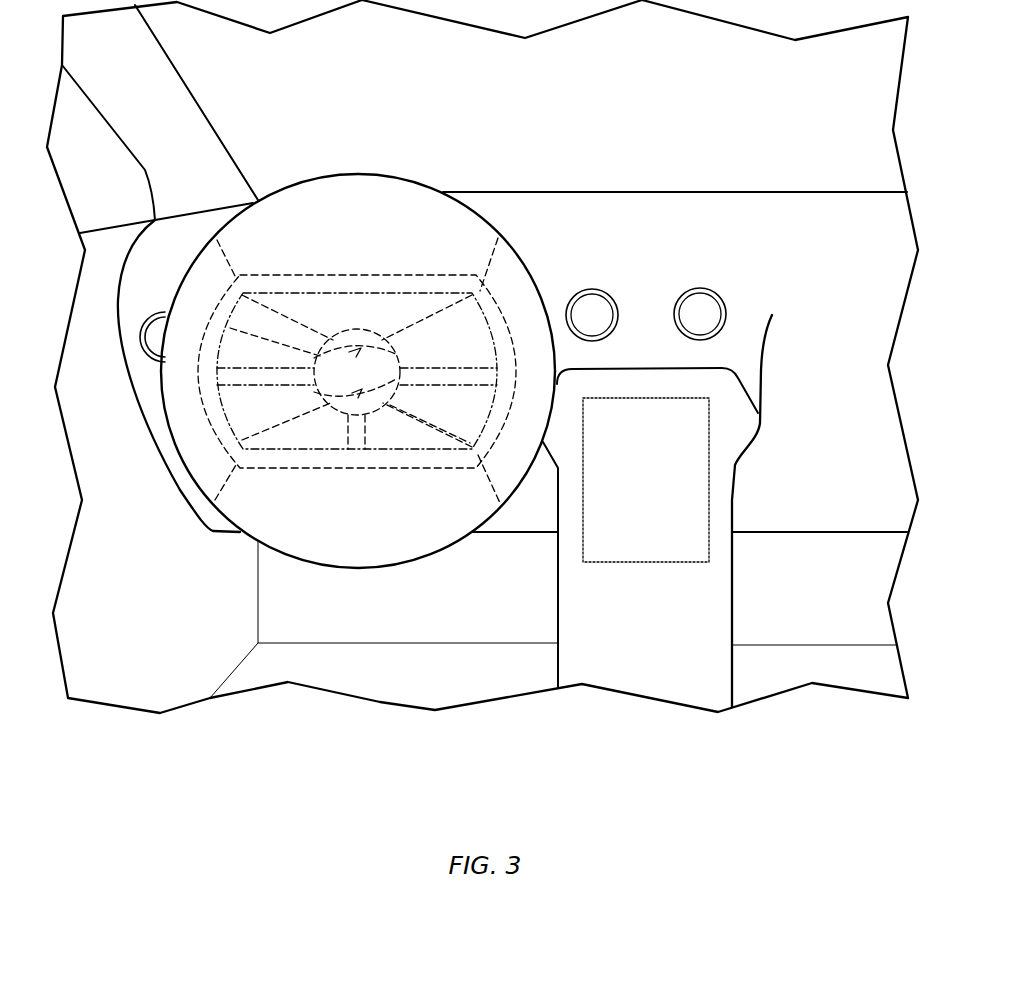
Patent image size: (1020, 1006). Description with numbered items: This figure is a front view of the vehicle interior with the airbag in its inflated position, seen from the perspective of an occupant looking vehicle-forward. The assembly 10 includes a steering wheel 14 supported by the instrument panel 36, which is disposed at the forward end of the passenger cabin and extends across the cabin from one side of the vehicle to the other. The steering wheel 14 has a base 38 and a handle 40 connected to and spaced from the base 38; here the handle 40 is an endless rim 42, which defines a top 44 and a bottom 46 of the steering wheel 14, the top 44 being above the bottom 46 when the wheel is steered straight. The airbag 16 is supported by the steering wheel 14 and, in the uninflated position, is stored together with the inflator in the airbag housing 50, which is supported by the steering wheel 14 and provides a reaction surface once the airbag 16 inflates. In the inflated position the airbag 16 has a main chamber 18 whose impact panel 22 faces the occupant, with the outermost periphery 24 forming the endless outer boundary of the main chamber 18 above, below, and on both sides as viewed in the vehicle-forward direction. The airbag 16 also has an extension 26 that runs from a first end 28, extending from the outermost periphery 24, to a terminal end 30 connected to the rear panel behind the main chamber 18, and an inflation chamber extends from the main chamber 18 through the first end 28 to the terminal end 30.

The assembly 10 is at (173, 562).
The steering wheel 14 is at (315, 272).
The airbag 16 is at (397, 150).
The main chamber 18 is at (207, 467).
The impact panel 22 is at (315, 440).
The outermost periphery 24 is at (310, 178).
The extension 26 is at (440, 237).
The first end 28 is at (337, 172).
The terminal end 30 is at (320, 356).
The instrument panel 36 is at (722, 217).
The base 38 is at (195, 396).
The handle 40 is at (538, 462).
The rim 42 is at (393, 398).
The top 44 is at (362, 270).
The bottom 46 is at (357, 475).
The airbag housing 50 is at (532, 235).